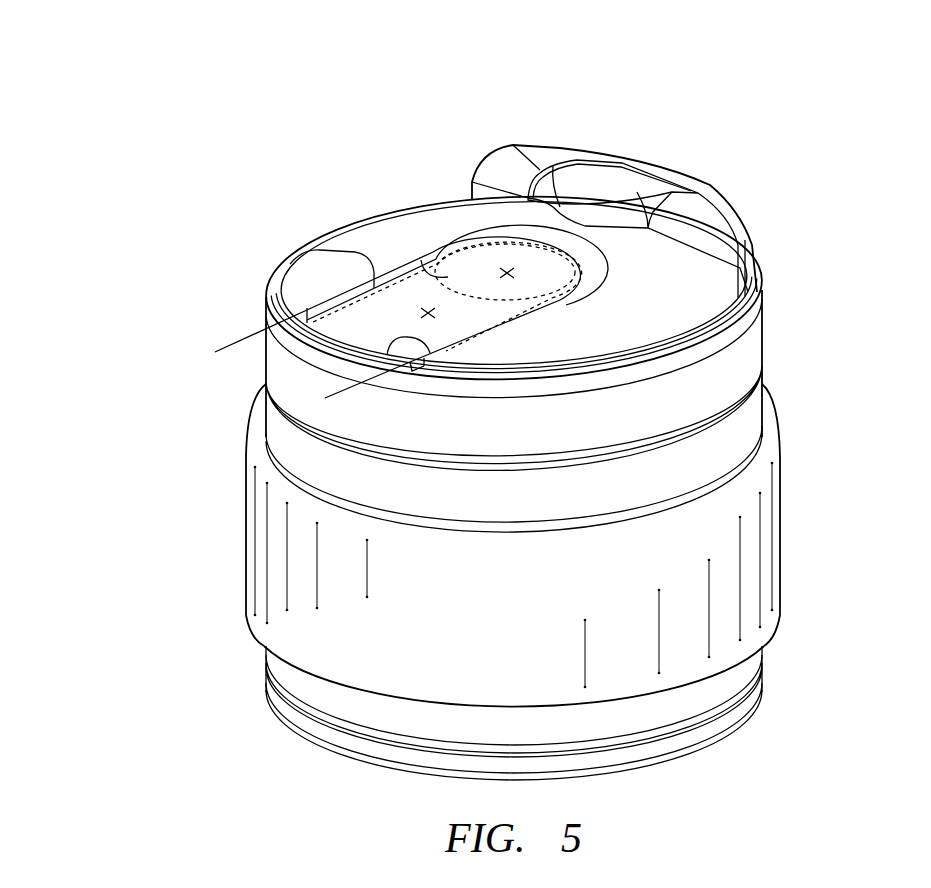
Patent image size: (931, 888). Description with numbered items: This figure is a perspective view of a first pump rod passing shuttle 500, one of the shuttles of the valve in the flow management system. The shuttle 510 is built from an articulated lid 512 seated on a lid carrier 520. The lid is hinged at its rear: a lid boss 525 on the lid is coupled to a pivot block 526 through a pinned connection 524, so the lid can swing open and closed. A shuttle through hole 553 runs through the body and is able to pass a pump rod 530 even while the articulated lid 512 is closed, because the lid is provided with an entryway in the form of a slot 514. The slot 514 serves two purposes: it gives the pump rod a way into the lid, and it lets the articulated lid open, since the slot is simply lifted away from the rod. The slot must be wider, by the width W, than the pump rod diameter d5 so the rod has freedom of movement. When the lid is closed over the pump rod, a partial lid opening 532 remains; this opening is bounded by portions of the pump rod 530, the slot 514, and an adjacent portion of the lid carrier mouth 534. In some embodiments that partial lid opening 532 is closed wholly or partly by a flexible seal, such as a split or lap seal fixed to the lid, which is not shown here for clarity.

The first pump rod passing shuttle 500 is at (331, 180).
The shuttle 510 is at (198, 481).
The articulated lid 512 is at (663, 301).
The slot 514 is at (308, 254).
The lid carrier 520 is at (238, 576).
The pinned connection 524 is at (758, 257).
The lid boss 525 is at (633, 182).
The pivot block 526 is at (717, 212).
The pump rod 530 is at (413, 268).
The partial lid opening 532 is at (445, 308).
The lid carrier mouth 534 is at (418, 348).
The shuttle through hole 553 is at (702, 748).
The pump rod diameter d5 is at (447, 287).
The slot width W is at (222, 357).